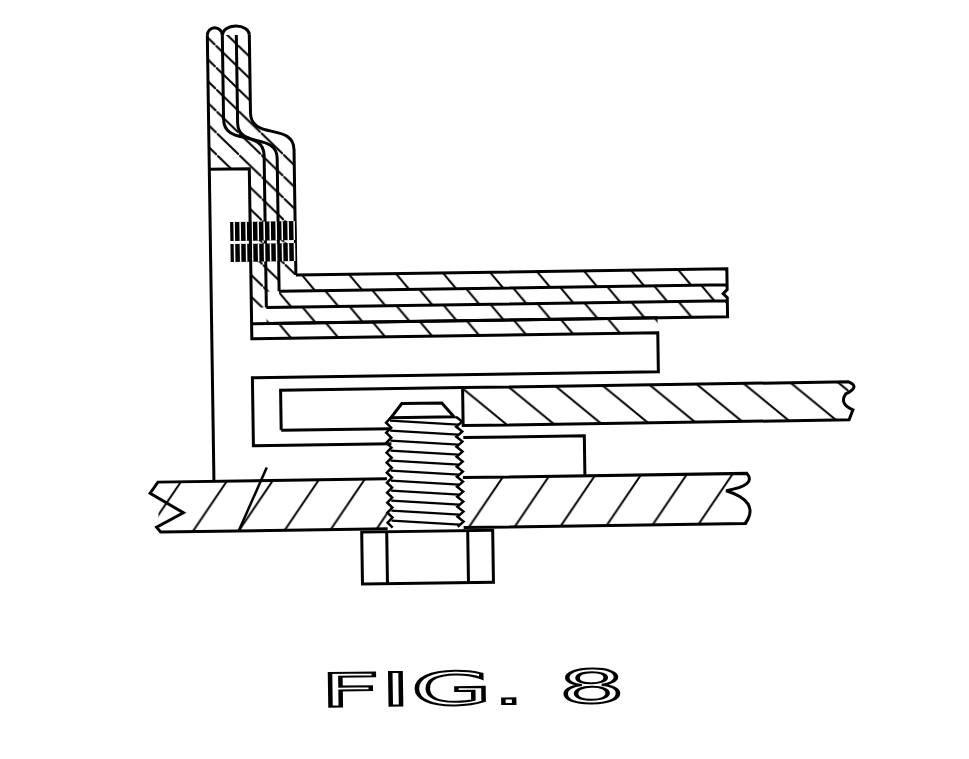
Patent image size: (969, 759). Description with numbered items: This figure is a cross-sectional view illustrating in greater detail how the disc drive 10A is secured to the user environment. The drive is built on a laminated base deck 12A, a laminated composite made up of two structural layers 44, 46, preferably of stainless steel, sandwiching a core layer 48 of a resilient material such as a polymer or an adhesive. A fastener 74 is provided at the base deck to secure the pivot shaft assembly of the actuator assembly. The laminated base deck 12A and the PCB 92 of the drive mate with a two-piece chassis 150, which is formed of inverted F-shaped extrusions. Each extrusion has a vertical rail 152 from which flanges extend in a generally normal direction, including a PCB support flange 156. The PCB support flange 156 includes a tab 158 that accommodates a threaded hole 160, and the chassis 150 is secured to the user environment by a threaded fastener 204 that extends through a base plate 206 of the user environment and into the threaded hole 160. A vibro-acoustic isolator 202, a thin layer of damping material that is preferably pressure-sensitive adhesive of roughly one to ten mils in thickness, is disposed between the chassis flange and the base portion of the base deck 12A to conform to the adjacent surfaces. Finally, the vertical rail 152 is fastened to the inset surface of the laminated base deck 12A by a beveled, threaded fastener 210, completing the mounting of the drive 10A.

The disc drive 10A is at (207, 168).
The laminated base deck 12A is at (299, 203).
The structural layer 44 is at (221, 79).
The structural layer 46 is at (266, 132).
The core layer 48 is at (238, 72).
The fastener 74 is at (362, 414).
The PCB 92 is at (786, 410).
The two-piece chassis 150 is at (212, 345).
The vertical rail 152 is at (231, 237).
The PCB support flange 156 is at (217, 534).
The tab 158 is at (563, 469).
The threaded hole 160 is at (455, 458).
The vibro-acoustic isolator 202 is at (607, 322).
The threaded fastener 204 is at (417, 565).
The base plate 206 is at (184, 510).
The beveled threaded fastener 210 is at (229, 256).